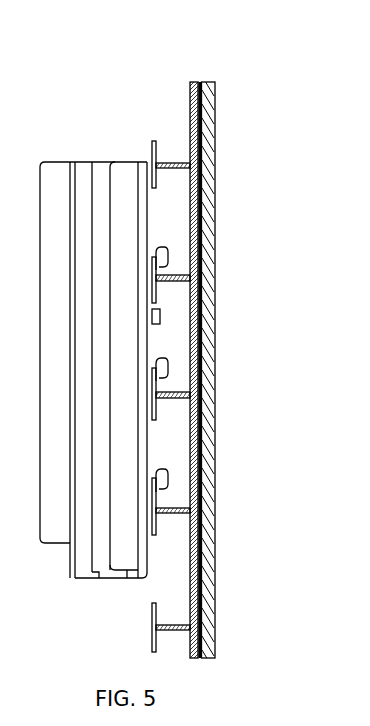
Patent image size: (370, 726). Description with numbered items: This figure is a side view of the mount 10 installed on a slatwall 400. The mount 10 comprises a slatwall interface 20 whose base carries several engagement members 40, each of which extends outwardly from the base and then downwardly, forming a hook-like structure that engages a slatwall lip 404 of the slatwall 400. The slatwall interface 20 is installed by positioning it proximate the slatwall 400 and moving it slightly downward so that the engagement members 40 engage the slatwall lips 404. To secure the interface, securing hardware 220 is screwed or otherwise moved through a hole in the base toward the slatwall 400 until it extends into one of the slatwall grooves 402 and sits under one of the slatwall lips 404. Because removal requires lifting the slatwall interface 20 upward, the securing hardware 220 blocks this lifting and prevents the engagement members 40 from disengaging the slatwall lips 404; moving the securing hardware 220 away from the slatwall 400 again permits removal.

The slatwall 400 is at (188, 52).
The mount 10 is at (96, 135).
The slatwall interface 20 is at (122, 156).
The engagement member 40 is at (165, 250).
The securing hardware 220 is at (161, 314).
The slatwall groove 402 is at (179, 459).
The slatwall lip 404 is at (152, 609).